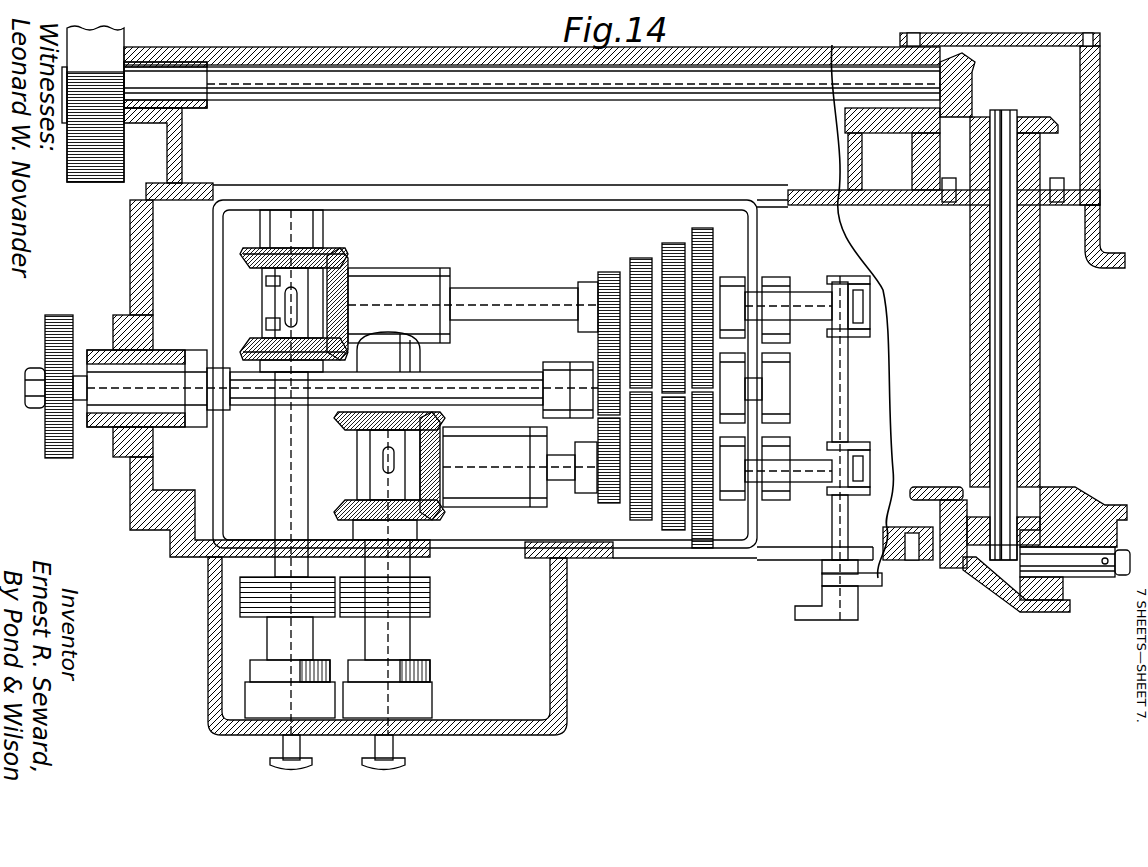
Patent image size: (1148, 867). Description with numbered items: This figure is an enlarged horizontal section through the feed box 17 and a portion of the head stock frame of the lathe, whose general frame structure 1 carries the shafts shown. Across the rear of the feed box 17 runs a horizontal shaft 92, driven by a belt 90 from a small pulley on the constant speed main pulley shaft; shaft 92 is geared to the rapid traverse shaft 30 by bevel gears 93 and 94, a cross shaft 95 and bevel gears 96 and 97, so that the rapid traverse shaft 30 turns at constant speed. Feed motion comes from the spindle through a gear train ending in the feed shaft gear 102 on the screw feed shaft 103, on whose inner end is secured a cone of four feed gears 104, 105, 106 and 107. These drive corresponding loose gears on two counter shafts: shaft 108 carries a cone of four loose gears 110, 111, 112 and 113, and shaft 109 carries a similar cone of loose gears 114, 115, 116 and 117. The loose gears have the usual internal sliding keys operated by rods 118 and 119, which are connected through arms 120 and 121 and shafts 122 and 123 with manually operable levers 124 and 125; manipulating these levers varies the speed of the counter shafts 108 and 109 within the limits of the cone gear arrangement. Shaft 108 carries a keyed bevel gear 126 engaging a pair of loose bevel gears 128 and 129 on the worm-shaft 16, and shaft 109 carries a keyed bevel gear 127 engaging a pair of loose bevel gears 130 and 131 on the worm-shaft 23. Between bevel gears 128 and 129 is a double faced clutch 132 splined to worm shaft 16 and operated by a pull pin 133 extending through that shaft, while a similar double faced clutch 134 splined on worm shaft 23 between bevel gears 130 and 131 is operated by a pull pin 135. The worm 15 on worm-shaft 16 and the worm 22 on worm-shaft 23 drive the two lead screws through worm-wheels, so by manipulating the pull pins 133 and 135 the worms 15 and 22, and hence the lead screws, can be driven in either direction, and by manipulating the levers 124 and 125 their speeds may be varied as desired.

The general frame structure 1 is at (1088, 500).
The worm 15 is at (240, 592).
The worm-shaft 16 is at (268, 640).
The feed box 17 is at (567, 637).
The worm 22 is at (430, 592).
The worm-shaft 23 is at (410, 637).
The rapid traverse shaft 30 is at (1120, 578).
The belt 90 is at (123, 150).
The horizontal shaft 92 is at (300, 100).
The bevel gear 93 is at (966, 66).
The bevel gear 94 is at (1043, 118).
The cross shaft 95 is at (1022, 318).
The bevel gear 96 is at (958, 568).
The bevel gear 97 is at (1010, 605).
The feed shaft gear 102 is at (75, 320).
The screw feed shaft 103 is at (475, 378).
The feed gear 104 is at (598, 355).
The feed gear 105 is at (597, 418).
The feed gear 106 is at (690, 430).
The feed gear 107 is at (722, 372).
The counter shaft 108 is at (510, 292).
The counter shaft 109 is at (480, 450).
The loose gear 110 is at (606, 275).
The loose gear 111 is at (640, 260).
The loose gear 112 is at (672, 245).
The loose gear 113 is at (712, 240).
The loose gear 114 is at (606, 503).
The loose gear 115 is at (641, 520).
The loose gear 116 is at (672, 533).
The loose gear 117 is at (703, 548).
The rod 118 is at (808, 315).
The rod 119 is at (805, 462).
The arm 120 is at (848, 282).
The arm 121 is at (856, 444).
The shaft 122 is at (848, 385).
The shaft 123 is at (832, 513).
The manually operable lever 124 is at (800, 620).
The manually operable lever 125 is at (878, 586).
The bevel gear 126 is at (350, 268).
The bevel gear 127 is at (440, 505).
The loose bevel gear 128 is at (243, 257).
The loose bevel gear 129 is at (243, 345).
The loose bevel gear 130 is at (350, 420).
The loose bevel gear 131 is at (348, 502).
The double faced clutch 132 is at (268, 295).
The pull pin 133 is at (283, 748).
The double faced clutch 134 is at (370, 458).
The pull pin 135 is at (395, 748).